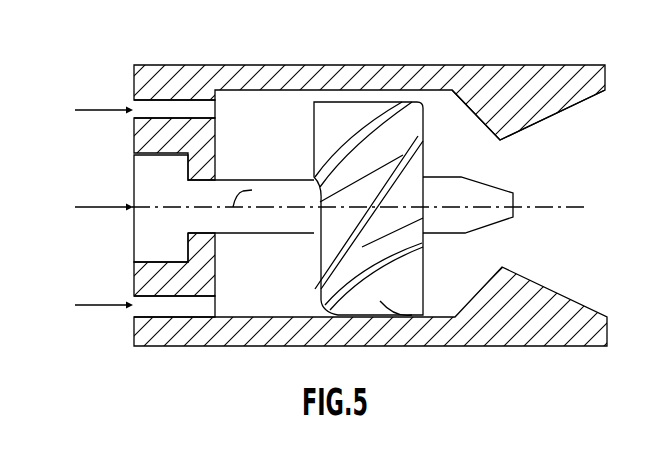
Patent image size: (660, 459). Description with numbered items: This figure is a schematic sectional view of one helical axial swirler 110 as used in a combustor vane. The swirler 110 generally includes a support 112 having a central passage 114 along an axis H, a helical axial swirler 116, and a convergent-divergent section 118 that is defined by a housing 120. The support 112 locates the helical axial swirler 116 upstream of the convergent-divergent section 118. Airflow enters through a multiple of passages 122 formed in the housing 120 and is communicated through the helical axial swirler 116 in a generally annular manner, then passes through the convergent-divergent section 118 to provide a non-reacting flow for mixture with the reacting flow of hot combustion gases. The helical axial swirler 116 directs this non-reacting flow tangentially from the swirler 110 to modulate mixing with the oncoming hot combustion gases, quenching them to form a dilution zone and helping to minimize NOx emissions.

The swirler 110 is at (547, 36).
The support 112 is at (240, 180).
The central passage 114 is at (255, 228).
The helical axial swirler 116 is at (417, 282).
The convergent-divergent section 118 is at (528, 123).
The housing 120 is at (468, 72).
The passages 122 is at (162, 104).